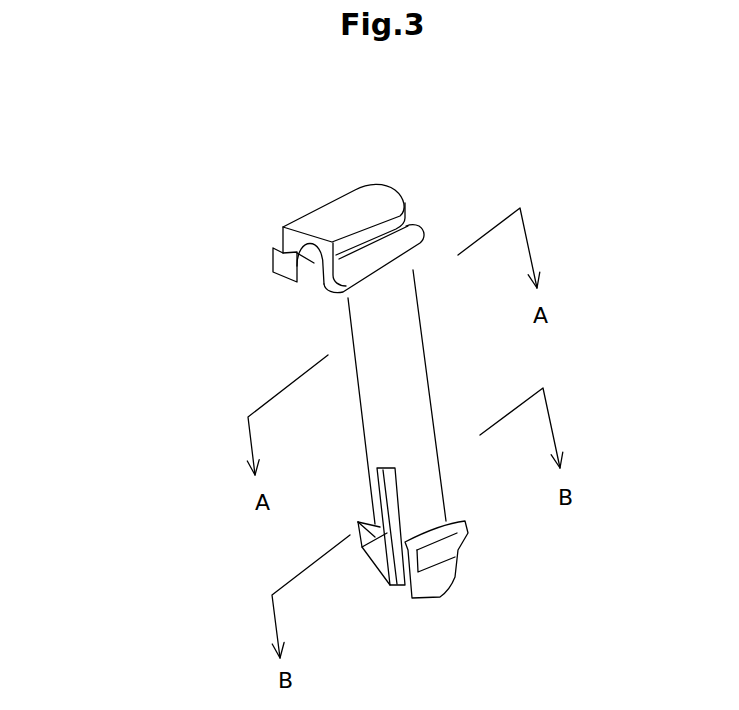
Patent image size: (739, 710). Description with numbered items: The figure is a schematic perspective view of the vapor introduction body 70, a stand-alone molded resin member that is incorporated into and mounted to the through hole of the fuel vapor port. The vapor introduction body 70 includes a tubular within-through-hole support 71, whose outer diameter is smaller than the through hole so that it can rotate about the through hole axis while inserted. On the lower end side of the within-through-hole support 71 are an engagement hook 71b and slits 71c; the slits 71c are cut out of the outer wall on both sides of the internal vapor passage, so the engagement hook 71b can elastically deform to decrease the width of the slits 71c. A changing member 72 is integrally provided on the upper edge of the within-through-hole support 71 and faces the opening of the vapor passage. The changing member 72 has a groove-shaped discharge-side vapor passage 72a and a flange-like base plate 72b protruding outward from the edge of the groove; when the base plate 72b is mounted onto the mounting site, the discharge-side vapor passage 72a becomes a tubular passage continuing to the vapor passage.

The vapor introduction body 70 is at (331, 374).
The within-through-hole support 71 is at (417, 318).
The engagement hook 71b is at (410, 478).
The slits 71c is at (363, 555).
The changing member 72 is at (355, 203).
The discharge-side vapor passage 72a is at (281, 252).
The base plate 72b is at (272, 272).